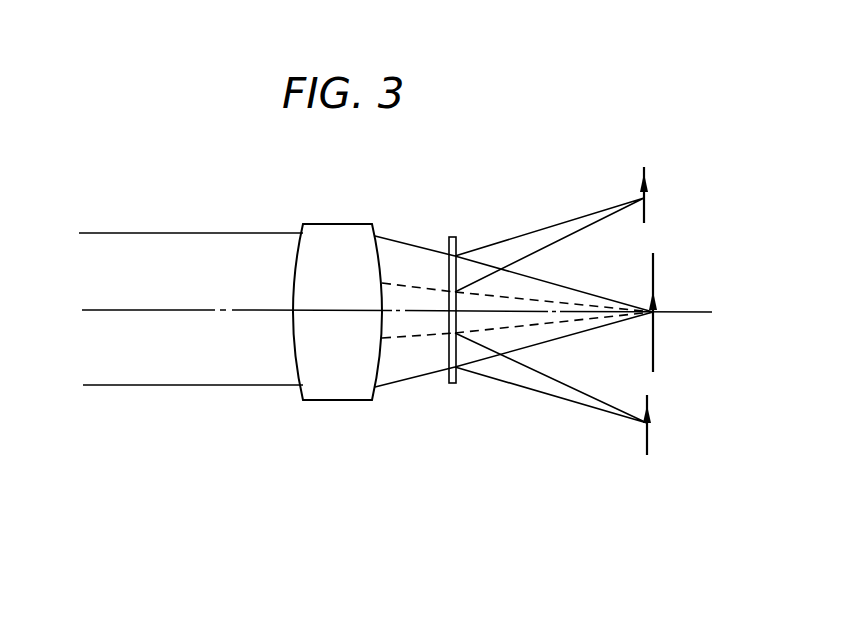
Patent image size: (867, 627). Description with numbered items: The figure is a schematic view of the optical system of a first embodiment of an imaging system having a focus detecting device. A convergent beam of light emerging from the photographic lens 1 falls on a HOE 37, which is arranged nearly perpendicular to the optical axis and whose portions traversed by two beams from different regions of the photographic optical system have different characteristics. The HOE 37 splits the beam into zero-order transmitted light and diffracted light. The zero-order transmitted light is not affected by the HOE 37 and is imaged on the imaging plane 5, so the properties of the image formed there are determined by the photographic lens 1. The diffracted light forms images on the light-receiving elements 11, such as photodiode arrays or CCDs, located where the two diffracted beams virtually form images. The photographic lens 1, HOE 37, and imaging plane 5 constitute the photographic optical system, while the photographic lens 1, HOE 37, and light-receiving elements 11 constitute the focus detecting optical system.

The photographic lens 1 is at (357, 224).
The HOE 37 is at (455, 384).
The imaging plane 5 is at (653, 360).
The light-receiving elements 11 is at (643, 168).